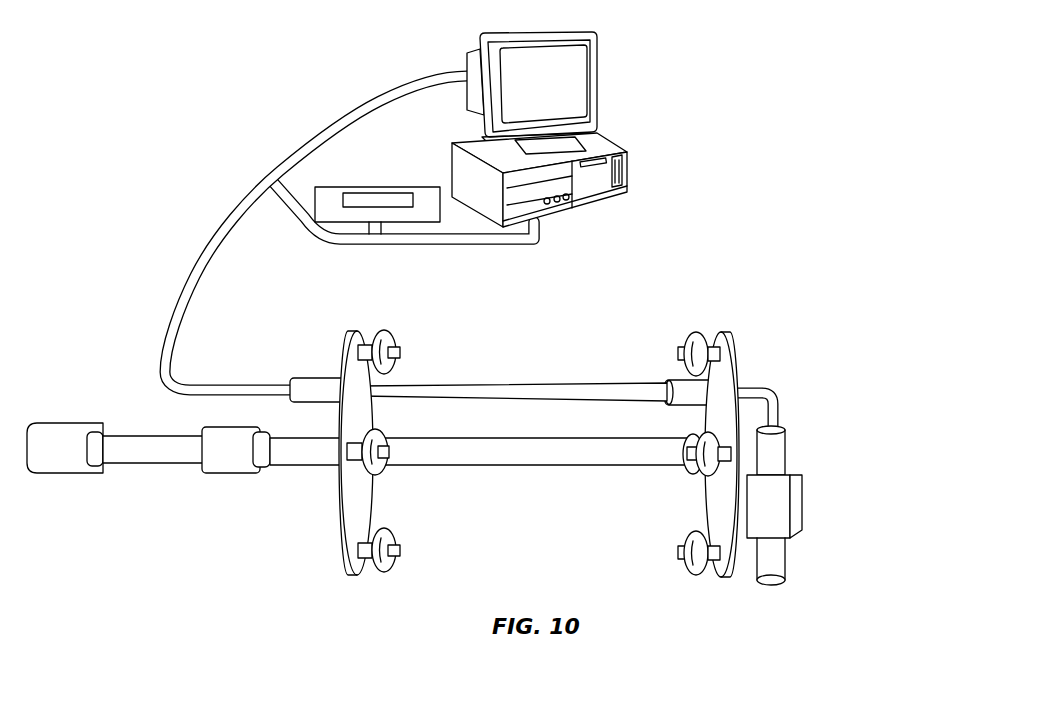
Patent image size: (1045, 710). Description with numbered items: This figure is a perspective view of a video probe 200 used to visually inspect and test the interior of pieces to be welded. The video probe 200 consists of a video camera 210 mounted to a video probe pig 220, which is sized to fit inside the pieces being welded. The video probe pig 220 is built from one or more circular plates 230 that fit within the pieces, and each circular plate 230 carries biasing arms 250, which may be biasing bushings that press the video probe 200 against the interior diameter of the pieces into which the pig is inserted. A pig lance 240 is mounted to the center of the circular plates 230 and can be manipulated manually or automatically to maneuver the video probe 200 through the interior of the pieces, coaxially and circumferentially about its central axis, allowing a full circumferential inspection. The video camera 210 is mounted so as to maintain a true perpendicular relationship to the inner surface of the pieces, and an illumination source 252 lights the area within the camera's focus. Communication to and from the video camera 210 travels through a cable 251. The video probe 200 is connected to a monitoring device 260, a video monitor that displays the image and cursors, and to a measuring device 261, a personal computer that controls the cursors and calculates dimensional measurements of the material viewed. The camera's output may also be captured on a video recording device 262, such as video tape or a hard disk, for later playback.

The video probe 200 is at (235, 543).
The video camera 210 is at (787, 500).
The video probe pig 220 is at (527, 382).
The circular plate 230 is at (337, 495).
The pig lance 240 is at (170, 468).
The biasing arm 250 is at (685, 540).
The cable 251 is at (250, 383).
The illumination source 252 is at (803, 508).
The monitoring device 260 is at (598, 72).
The measuring device 261 is at (625, 157).
The video recording device 262 is at (383, 174).